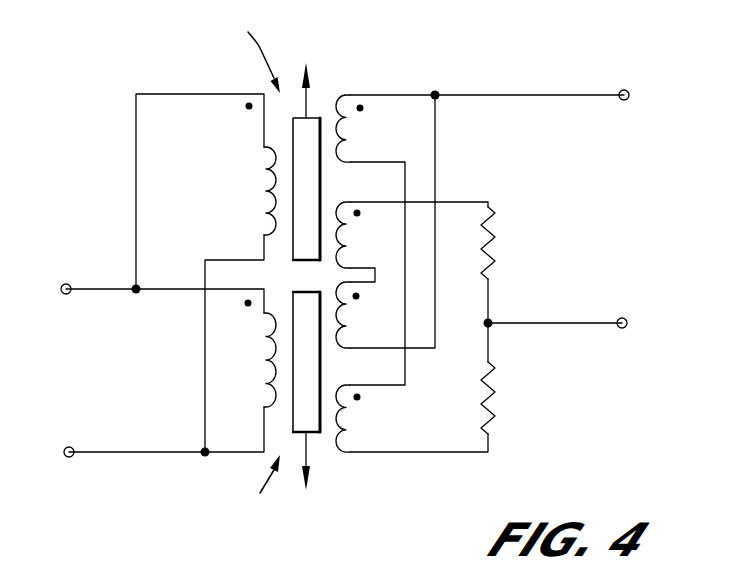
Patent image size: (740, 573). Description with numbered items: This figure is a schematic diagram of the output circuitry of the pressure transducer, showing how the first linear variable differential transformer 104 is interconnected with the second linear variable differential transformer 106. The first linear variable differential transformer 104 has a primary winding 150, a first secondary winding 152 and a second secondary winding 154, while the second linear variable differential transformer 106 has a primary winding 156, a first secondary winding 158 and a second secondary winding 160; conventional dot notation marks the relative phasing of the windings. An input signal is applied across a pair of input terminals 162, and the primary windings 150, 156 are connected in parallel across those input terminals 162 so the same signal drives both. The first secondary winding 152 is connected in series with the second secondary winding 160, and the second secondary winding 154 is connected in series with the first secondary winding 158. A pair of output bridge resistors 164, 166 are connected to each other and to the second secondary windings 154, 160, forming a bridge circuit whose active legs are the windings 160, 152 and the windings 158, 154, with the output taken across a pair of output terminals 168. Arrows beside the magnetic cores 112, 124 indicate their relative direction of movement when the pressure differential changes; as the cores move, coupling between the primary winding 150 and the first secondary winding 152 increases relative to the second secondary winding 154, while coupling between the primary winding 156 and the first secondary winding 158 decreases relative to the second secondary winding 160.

The first linear variable differential transformer 104 is at (246, 56).
The second linear variable differential transformer 106 is at (246, 484).
The magnetic core 112 is at (313, 117).
The magnetic core 124 is at (320, 403).
The primary winding 150 is at (267, 153).
The first secondary winding 152 is at (338, 128).
The second secondary winding 154 is at (340, 238).
The primary winding 156 is at (266, 370).
The first secondary winding 158 is at (337, 333).
The second secondary winding 160 is at (338, 438).
The input terminals 162 is at (68, 283).
The output bridge resistor 164 is at (496, 229).
The output bridge resistor 166 is at (490, 404).
The output terminals 168 is at (624, 90).